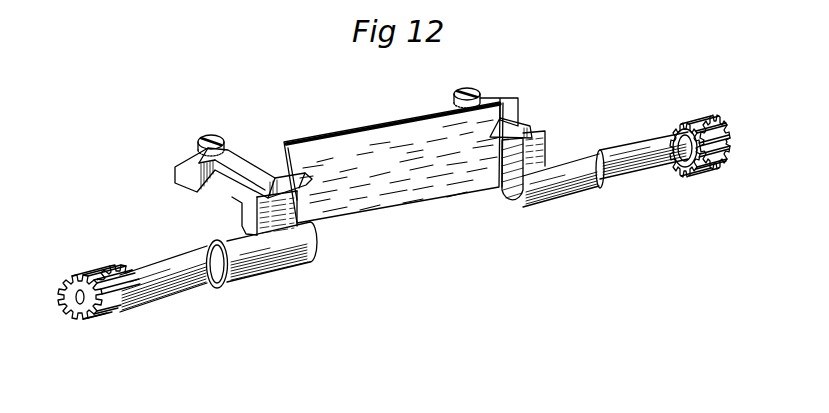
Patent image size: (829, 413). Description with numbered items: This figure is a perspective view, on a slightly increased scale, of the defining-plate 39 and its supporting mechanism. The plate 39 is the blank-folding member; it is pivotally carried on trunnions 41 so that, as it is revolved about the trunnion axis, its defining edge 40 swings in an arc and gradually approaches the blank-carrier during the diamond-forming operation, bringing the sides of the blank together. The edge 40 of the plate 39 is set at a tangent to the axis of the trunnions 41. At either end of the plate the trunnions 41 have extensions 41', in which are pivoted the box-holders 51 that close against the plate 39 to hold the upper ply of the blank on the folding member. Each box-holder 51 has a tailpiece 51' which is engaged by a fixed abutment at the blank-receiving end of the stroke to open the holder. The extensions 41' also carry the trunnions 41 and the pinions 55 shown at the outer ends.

The defining-plate 39 is at (402, 134).
The defining edge 40 is at (448, 200).
The trunnions 41 is at (397, 206).
The extensions of the trunnions 41' is at (383, 170).
The box-holders 51 is at (379, 145).
The tailpieces 51' is at (341, 115).
The pinions 55 is at (102, 323).